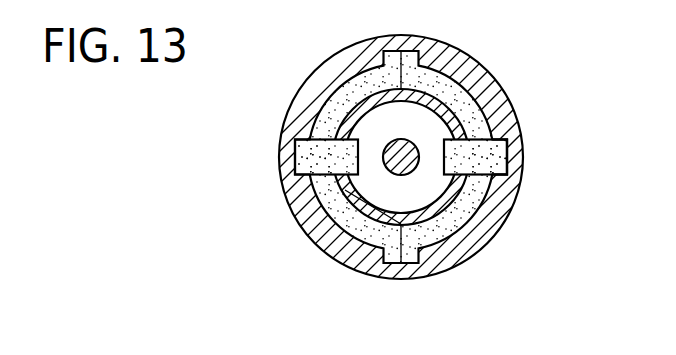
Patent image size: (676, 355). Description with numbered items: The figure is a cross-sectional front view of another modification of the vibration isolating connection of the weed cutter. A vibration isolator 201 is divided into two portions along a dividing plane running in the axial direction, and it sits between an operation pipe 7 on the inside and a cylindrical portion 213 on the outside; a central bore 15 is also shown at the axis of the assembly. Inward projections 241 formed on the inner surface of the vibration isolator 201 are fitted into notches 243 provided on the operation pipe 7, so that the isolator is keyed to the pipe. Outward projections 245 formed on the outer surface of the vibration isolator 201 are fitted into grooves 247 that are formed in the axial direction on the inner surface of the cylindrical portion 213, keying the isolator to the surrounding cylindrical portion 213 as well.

The cylindrical portion 213 is at (395, 160).
The vibration isolator 201 is at (323, 123).
The operation pipe 7 is at (467, 80).
The central bore 15 is at (413, 141).
The grooves 247 is at (506, 143).
The outward projections 245 is at (497, 163).
The notches 243 is at (312, 237).
The inward projections 241 is at (343, 180).